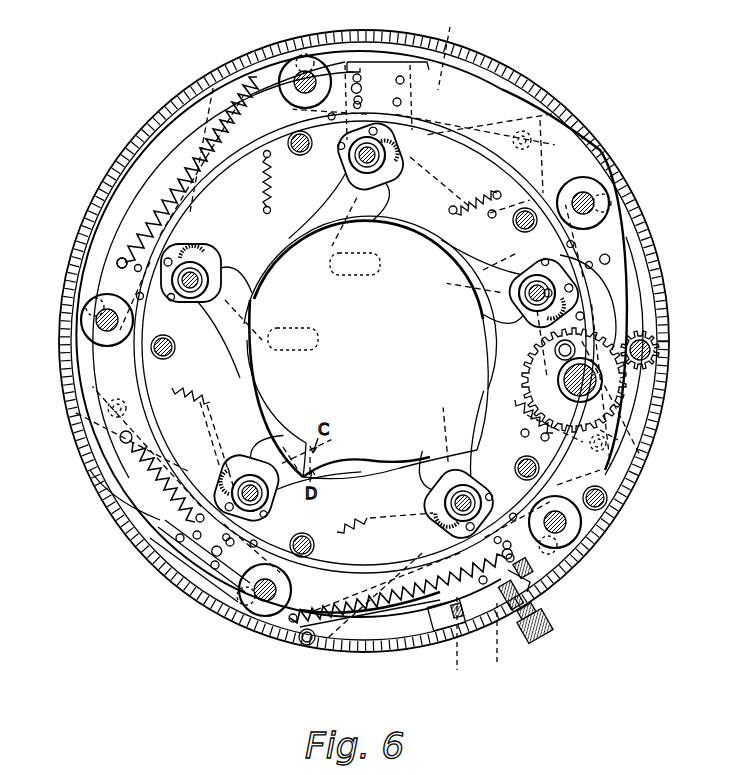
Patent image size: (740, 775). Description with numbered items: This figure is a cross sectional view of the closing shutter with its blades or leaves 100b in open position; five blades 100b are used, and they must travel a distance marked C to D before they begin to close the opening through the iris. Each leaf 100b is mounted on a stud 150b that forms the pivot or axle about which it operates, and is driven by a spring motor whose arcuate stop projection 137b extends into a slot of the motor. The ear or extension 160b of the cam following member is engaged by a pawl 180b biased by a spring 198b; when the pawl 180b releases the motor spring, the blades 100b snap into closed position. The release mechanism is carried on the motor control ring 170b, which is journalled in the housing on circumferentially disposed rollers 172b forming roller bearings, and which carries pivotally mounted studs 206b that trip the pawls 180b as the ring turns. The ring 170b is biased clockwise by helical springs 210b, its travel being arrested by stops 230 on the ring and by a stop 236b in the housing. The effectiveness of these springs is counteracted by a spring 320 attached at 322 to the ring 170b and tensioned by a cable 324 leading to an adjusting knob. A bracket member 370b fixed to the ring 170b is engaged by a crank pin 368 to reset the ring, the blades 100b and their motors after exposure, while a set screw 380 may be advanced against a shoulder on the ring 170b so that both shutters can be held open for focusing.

The blades or leaves 100b is at (557, 128).
The arcuate stop projection 137b is at (400, 150).
The stud 150b is at (378, 172).
The ear or extension 160b is at (341, 97).
The motor control ring 170b is at (175, 160).
The rollers 172b is at (292, 60).
The pawl 180b is at (330, 190).
The spring 198b is at (475, 197).
The stud 206b is at (615, 433).
The helical spring 210b is at (150, 203).
The stops 230 is at (532, 582).
The stop 236b is at (490, 625).
The spring 320 is at (160, 505).
The attachment point 322 is at (120, 437).
The cable 324 is at (215, 600).
The crank pin 368 is at (655, 380).
The bracket member 370b is at (613, 300).
The set screw 380 is at (548, 628).